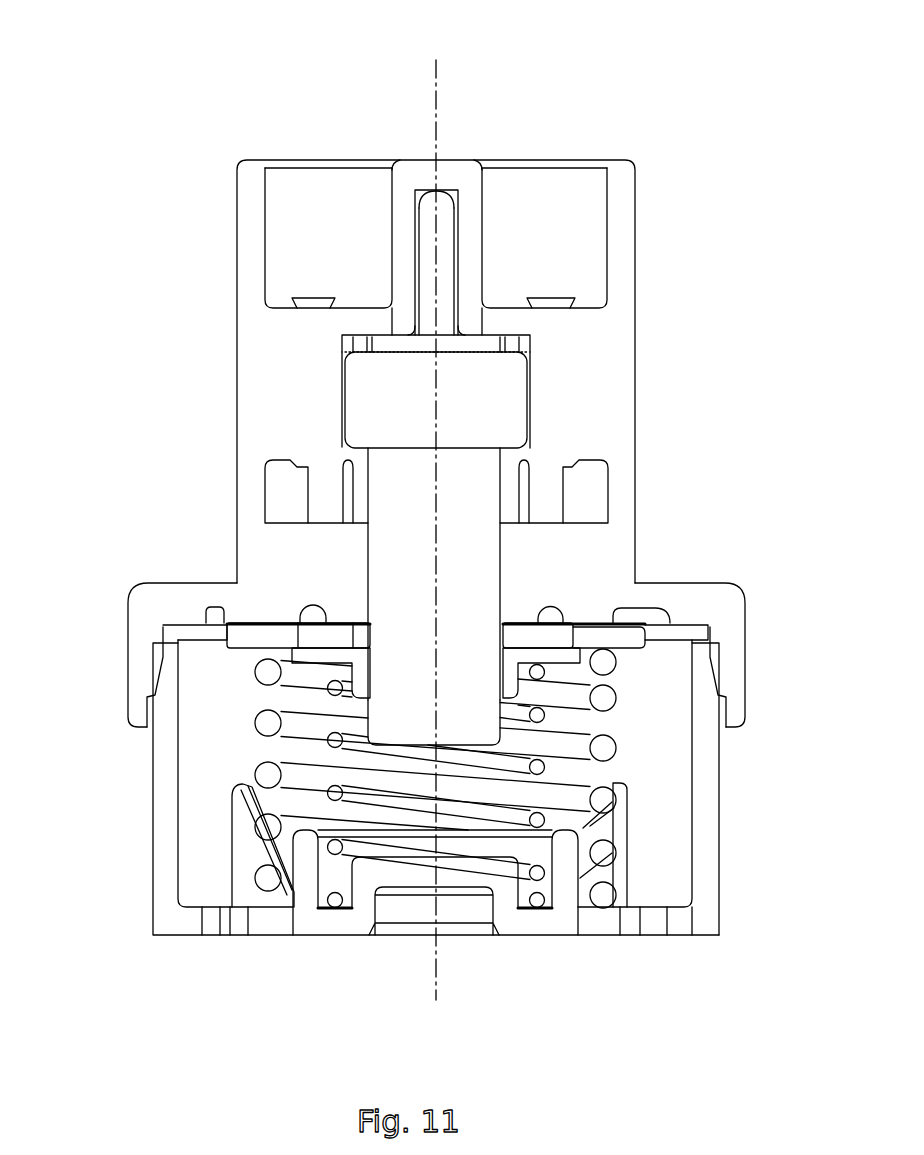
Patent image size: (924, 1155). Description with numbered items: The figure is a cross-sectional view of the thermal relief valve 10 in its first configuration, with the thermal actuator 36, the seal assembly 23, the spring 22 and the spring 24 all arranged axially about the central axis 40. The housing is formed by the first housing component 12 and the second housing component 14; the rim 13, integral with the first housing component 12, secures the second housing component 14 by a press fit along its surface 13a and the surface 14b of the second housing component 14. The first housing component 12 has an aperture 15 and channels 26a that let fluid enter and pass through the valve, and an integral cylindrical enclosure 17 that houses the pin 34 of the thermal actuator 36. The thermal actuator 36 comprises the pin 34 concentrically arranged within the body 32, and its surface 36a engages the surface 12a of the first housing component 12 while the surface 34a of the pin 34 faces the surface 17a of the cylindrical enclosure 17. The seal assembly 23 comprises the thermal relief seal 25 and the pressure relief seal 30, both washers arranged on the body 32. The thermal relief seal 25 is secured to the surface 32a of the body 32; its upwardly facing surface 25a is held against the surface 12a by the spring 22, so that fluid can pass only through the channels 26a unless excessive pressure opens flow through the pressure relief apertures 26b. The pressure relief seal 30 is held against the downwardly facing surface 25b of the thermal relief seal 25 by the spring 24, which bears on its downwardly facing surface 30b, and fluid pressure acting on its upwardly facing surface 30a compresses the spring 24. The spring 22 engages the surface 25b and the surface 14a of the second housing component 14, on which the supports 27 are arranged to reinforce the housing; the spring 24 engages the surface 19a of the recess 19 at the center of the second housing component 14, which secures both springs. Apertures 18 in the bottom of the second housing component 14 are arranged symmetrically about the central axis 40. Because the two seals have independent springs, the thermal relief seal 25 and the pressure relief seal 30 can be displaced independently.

The thermal relief valve 10 is at (137, 67).
The first housing component 12 is at (638, 367).
The surface of first housing component 12a is at (266, 496).
The rim 13 is at (122, 693).
The surface of rim 13a is at (724, 722).
The second housing component 14 is at (727, 787).
The surface of second housing component 14a is at (678, 907).
The surface of second housing component 14b is at (720, 822).
The aperture 15 is at (554, 158).
The cylindrical enclosure 17 is at (457, 158).
The surface of cylindrical enclosure 17a is at (420, 268).
The apertures 18 is at (227, 936).
The recess 19 is at (472, 891).
The surface of recess 19a is at (556, 847).
The spring 22 is at (319, 798).
The seal assembly 23 is at (246, 657).
The spring 24 is at (278, 816).
The thermal relief seal 25 is at (637, 654).
The upwardly facing surface of thermal relief seal 25a is at (622, 612).
The downwardly facing surface of thermal relief seal 25b is at (620, 670).
The channels 26a is at (303, 596).
The pressure relief apertures 26b is at (341, 634).
The supports 27 is at (259, 896).
The pressure relief seal 30 is at (302, 673).
The upwardly facing surface of pressure relief seal 30a is at (297, 632).
The downwardly facing surface of pressure relief seal 30b is at (251, 730).
The body 32 is at (508, 549).
The surface of body 32a is at (503, 580).
The pin 34 is at (459, 258).
The surface of pin 34a is at (457, 212).
The thermal actuator 36 is at (529, 423).
The surface of thermal actuator 36a is at (497, 335).
The central axis 40 is at (434, 992).